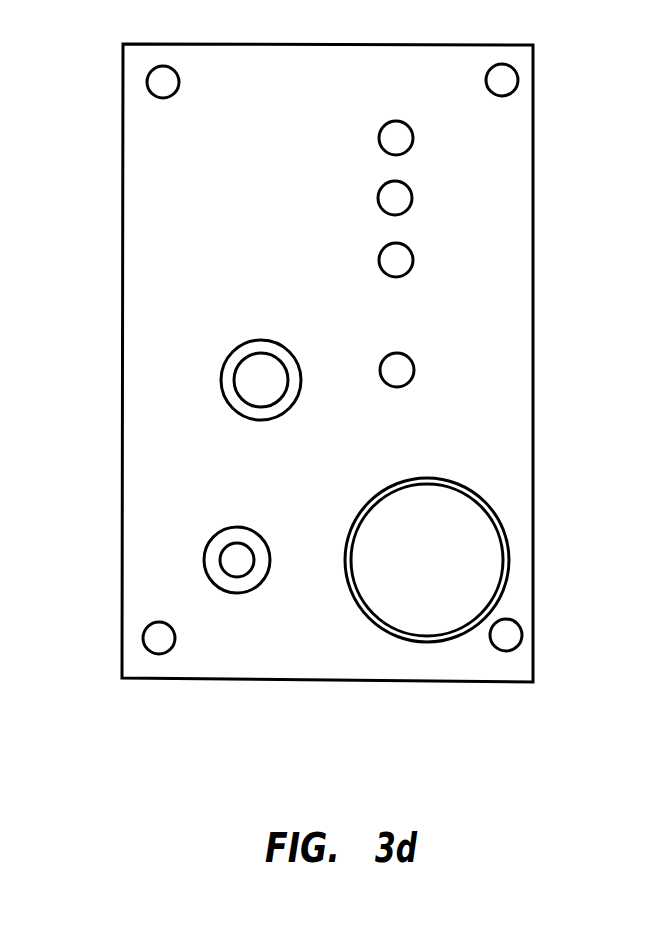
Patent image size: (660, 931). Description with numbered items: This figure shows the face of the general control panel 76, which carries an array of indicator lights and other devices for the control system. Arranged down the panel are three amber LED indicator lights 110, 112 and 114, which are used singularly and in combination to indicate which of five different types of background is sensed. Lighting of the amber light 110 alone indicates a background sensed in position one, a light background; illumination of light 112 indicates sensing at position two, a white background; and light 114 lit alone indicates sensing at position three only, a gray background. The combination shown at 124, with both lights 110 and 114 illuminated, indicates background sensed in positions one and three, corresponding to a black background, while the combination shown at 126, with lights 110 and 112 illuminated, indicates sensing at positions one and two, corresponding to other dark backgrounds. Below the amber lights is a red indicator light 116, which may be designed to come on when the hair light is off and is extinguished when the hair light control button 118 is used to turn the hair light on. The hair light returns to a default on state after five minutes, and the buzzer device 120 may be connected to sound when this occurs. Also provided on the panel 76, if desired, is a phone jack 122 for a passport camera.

The general control panel 76 is at (152, 213).
The amber LED indicator light 110 is at (394, 122).
The amber LED indicator light 112 is at (380, 189).
The amber LED indicator light 114 is at (396, 277).
The red indicator light 116 is at (397, 387).
The hair light control button 118 is at (221, 381).
The buzzer device 120 is at (417, 527).
The phone jack for a passport camera 122 is at (240, 528).
The combination of lights 110 and 114 illuminated 124 is at (370, 248).
The combination of lights 110 and 112 illuminated 126 is at (415, 148).